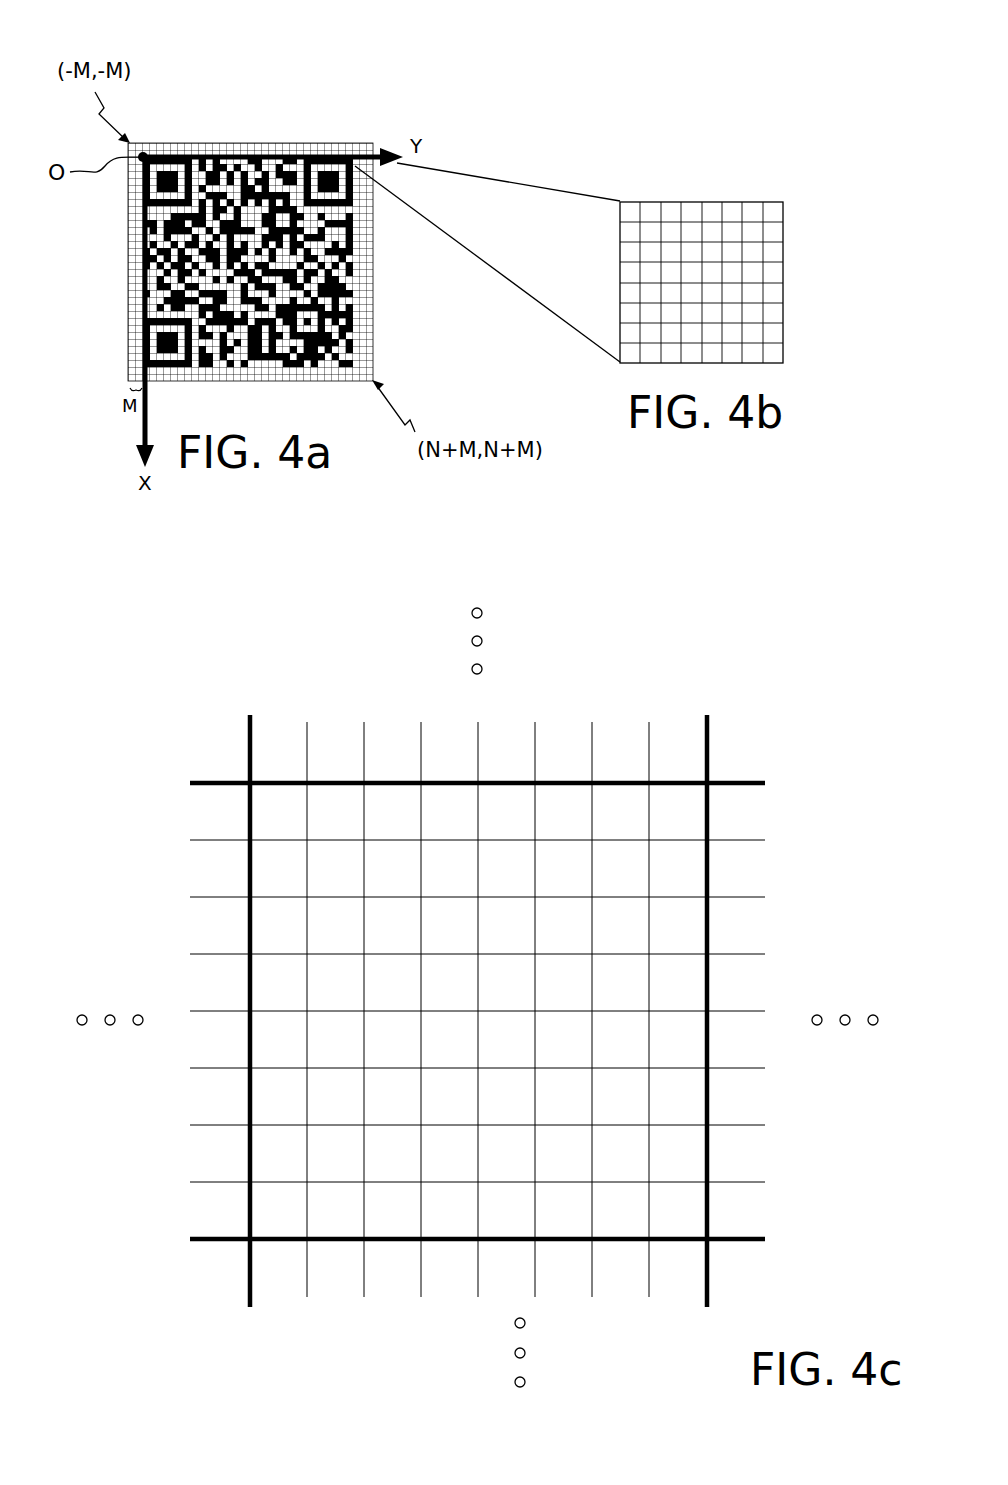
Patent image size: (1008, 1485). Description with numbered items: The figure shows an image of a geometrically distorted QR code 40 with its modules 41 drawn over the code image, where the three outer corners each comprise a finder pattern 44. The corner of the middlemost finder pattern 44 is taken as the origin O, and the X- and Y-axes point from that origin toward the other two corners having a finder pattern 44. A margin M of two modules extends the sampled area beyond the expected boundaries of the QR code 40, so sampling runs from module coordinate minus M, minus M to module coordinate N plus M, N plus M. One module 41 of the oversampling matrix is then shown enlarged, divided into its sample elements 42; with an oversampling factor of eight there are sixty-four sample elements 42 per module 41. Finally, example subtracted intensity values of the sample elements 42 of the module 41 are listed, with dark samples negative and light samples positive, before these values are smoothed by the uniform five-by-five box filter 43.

In FIG. 4a, the QR code 40 is at (308, 114).
In FIG. 4a, the module 41 is at (163, 157).
In FIG. 4b, the module 41 is at (786, 191).
In FIG. 4c, the module 41 is at (827, 859).
In FIG. 4b, the sample element 42 is at (690, 217).
In FIG. 4c, the sample element 42 is at (318, 800).
In FIG. 4c, the box filter 43 is at (195, 850).
In FIG. 4a, the finder pattern 44 is at (143, 188).